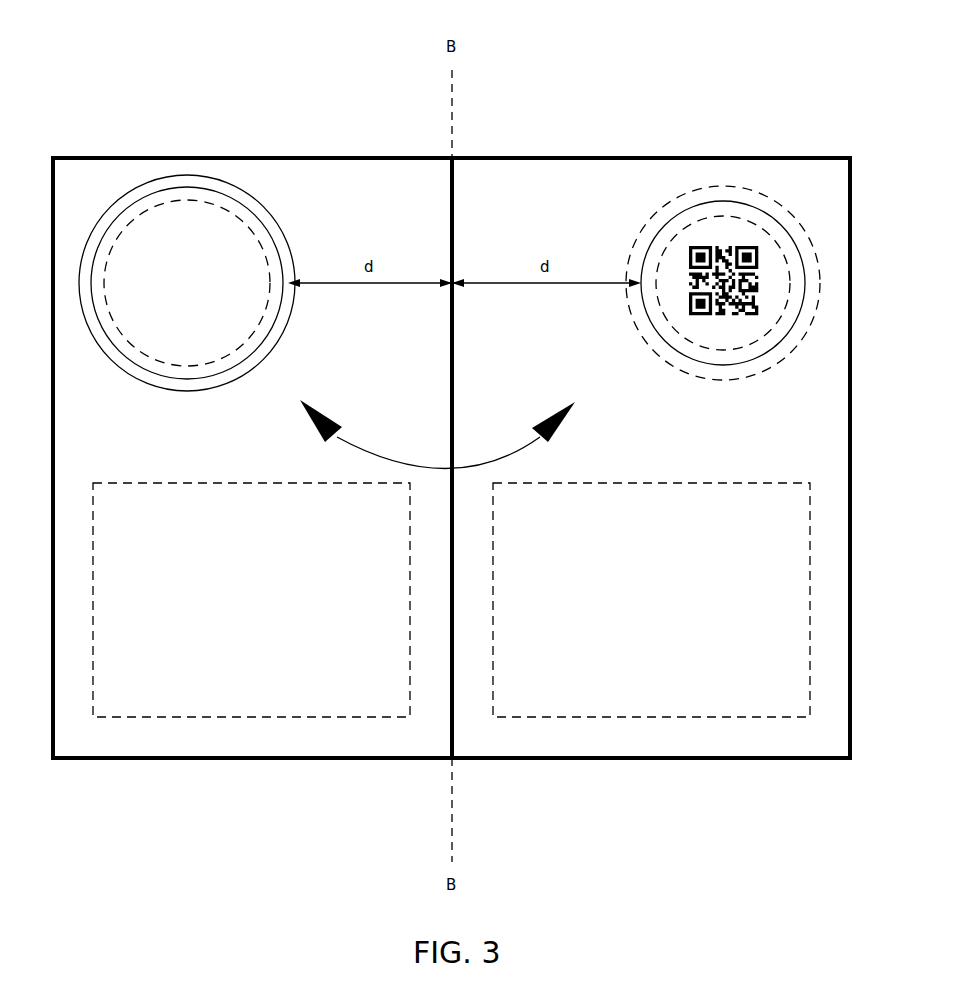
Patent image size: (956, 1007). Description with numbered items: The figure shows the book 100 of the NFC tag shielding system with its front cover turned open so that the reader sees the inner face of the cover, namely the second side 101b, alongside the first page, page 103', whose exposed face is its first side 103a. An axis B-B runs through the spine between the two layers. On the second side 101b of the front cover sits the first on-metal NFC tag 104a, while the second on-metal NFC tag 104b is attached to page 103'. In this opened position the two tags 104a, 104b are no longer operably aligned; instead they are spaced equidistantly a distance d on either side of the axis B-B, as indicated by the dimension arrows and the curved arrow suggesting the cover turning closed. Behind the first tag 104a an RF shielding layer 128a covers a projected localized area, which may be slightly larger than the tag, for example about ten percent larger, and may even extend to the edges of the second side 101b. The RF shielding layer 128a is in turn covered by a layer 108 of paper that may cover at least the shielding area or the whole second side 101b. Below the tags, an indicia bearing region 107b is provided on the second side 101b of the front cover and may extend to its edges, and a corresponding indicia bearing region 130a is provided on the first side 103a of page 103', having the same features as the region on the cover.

The book 100 is at (212, 75).
The second side of the front cover 101b is at (313, 180).
The first side of page 103a is at (505, 197).
The page 103' is at (652, 124).
The layer of paper 108 is at (288, 322).
The RF shielding layer 128a is at (255, 213).
The first on-metal NFC tag 104a is at (187, 200).
The second on-metal NFC tag 104b is at (697, 360).
The indicia bearing region 107b is at (217, 483).
The indicia bearing region 130a is at (547, 483).